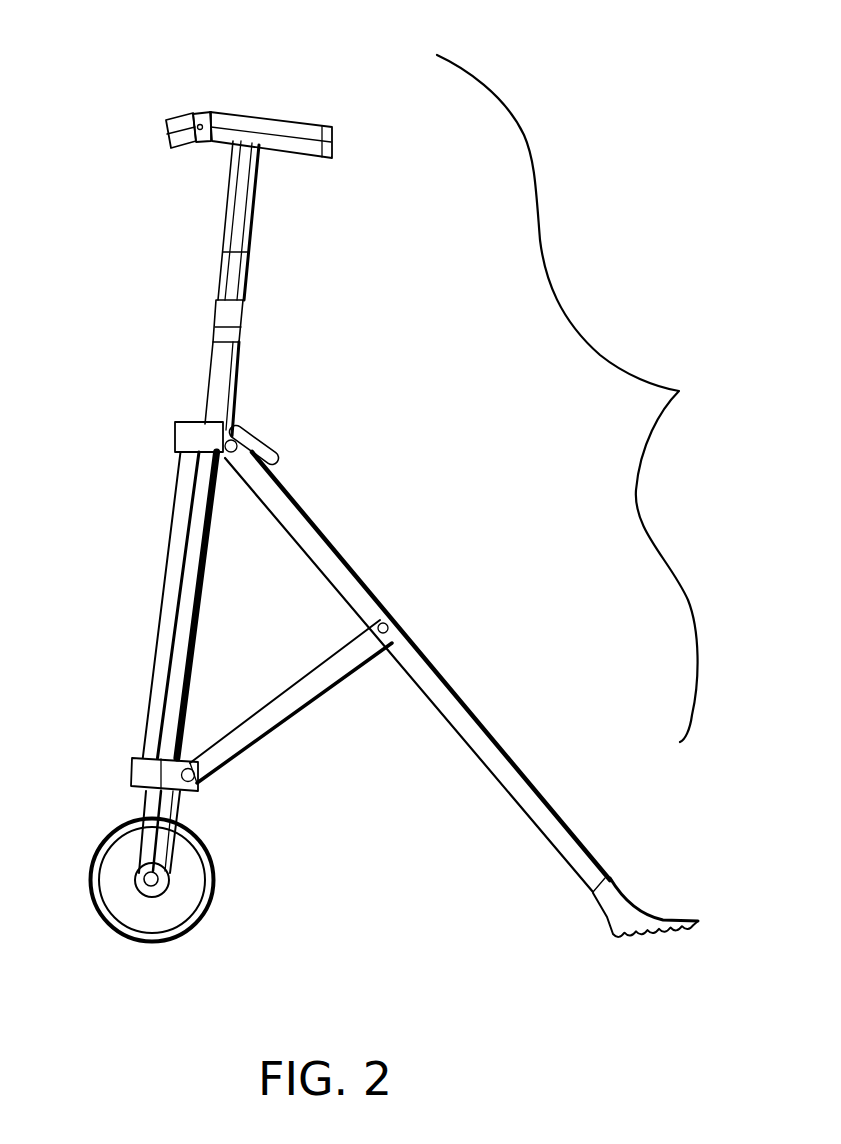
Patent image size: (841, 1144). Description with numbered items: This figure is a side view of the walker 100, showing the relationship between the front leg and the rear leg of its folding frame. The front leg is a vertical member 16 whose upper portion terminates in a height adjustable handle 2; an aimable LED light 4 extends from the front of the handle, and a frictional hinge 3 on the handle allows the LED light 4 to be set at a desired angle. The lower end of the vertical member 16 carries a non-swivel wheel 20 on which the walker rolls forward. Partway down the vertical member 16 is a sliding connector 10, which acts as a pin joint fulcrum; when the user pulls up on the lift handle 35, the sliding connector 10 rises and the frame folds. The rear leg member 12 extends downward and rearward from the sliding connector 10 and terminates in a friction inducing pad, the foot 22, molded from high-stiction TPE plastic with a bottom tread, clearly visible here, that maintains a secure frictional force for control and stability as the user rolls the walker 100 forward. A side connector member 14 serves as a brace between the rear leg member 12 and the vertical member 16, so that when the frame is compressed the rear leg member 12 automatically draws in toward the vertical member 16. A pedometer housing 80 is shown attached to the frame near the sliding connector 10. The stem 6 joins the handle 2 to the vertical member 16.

The height adjustable handle 2 is at (282, 125).
The frictional hinge 3 is at (198, 113).
The LED light 4 is at (171, 113).
The upper stem 6 is at (262, 210).
The lift handle 35 is at (210, 360).
The sliding connector 10 is at (235, 425).
The pedometer housing 80 is at (276, 418).
The vertical member 16 is at (168, 585).
The side connector member 14 is at (267, 708).
The rear leg member 12 is at (456, 700).
The friction inducing pad 22 is at (636, 903).
The non-swivel wheel 20 is at (218, 863).
The walker 100 is at (591, 398).